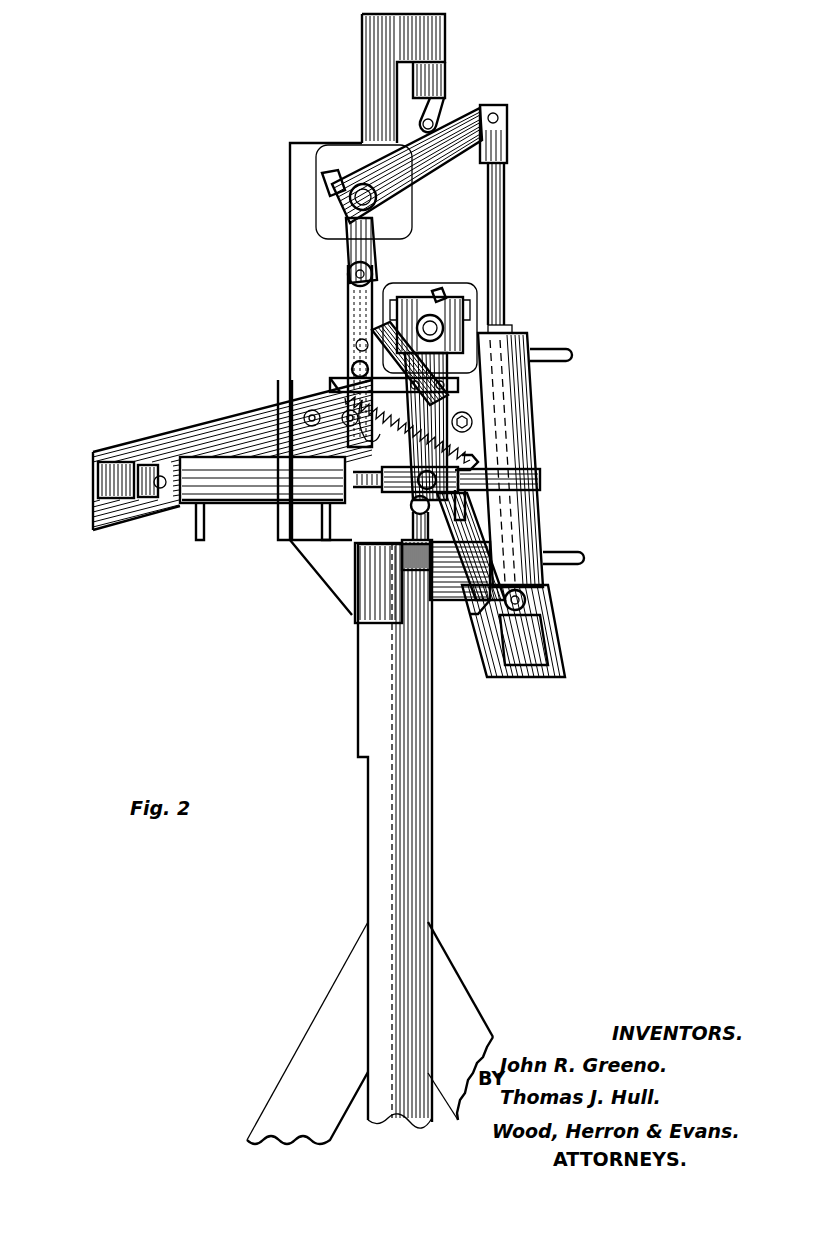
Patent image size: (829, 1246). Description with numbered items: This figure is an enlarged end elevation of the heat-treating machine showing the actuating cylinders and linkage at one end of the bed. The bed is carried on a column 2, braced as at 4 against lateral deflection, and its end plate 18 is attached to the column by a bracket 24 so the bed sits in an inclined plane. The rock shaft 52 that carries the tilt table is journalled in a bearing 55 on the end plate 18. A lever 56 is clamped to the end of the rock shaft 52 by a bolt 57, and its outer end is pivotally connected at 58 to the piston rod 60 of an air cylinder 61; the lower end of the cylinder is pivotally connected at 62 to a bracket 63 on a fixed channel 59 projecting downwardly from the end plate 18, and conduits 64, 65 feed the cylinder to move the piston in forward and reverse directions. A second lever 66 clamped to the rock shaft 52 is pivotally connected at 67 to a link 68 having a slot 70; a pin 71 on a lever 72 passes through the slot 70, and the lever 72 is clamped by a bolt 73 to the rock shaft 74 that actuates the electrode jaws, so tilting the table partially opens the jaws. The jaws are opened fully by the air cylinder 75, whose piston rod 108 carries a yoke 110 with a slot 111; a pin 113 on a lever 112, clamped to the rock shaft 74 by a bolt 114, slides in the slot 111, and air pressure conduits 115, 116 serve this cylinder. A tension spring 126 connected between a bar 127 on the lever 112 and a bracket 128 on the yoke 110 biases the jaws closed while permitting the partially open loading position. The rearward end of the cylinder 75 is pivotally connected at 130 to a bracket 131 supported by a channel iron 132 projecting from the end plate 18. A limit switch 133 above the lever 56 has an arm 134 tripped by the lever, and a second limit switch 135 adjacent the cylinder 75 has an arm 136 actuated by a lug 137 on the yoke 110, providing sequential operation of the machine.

The column 2 is at (410, 848).
The brace 4 is at (337, 995).
The end plate 18 is at (290, 163).
The bracket 24 is at (333, 588).
The rock shaft 52 is at (363, 195).
The bearing 55 is at (332, 158).
The lever 56 is at (443, 153).
The bolt 57 is at (325, 186).
The pivotal connection 58 is at (508, 115).
The fixed channel 59 is at (566, 670).
The piston rod 60 is at (505, 215).
The air cylinder 61 is at (535, 430).
The pivotal connection 62 is at (526, 600).
The bracket 63 is at (520, 636).
The conduit 64 is at (565, 352).
The conduit 65 is at (576, 552).
The second lever 66 is at (345, 258).
The pivotal connection 67 is at (373, 275).
The link 68 is at (348, 316).
The slot 70 is at (356, 345).
The pin 71 is at (352, 368).
The lever 72 is at (372, 330).
The bolt 73 is at (440, 288).
The rock shaft 74 is at (436, 326).
The air cylinder 75 is at (236, 504).
The piston rod 108 is at (326, 534).
The yoke 110 is at (410, 494).
The slot 111 is at (420, 492).
The lever 112 is at (435, 400).
The pin 113 is at (490, 480).
The bolt 114 is at (462, 302).
The air pressure conduit 115 is at (197, 532).
The air pressure conduit 116 is at (316, 540).
The tension spring 126 is at (452, 416).
The bar 127 is at (330, 385).
The bracket 128 is at (478, 462).
The pivotal connection 130 is at (158, 476).
The bracket 131 is at (98, 494).
The channel iron 132 is at (108, 520).
The limit switch 133 is at (446, 70).
The arm 134 is at (445, 105).
The second limit switch 135 is at (357, 632).
The arm 136 is at (404, 547).
The lug 137 is at (470, 507).